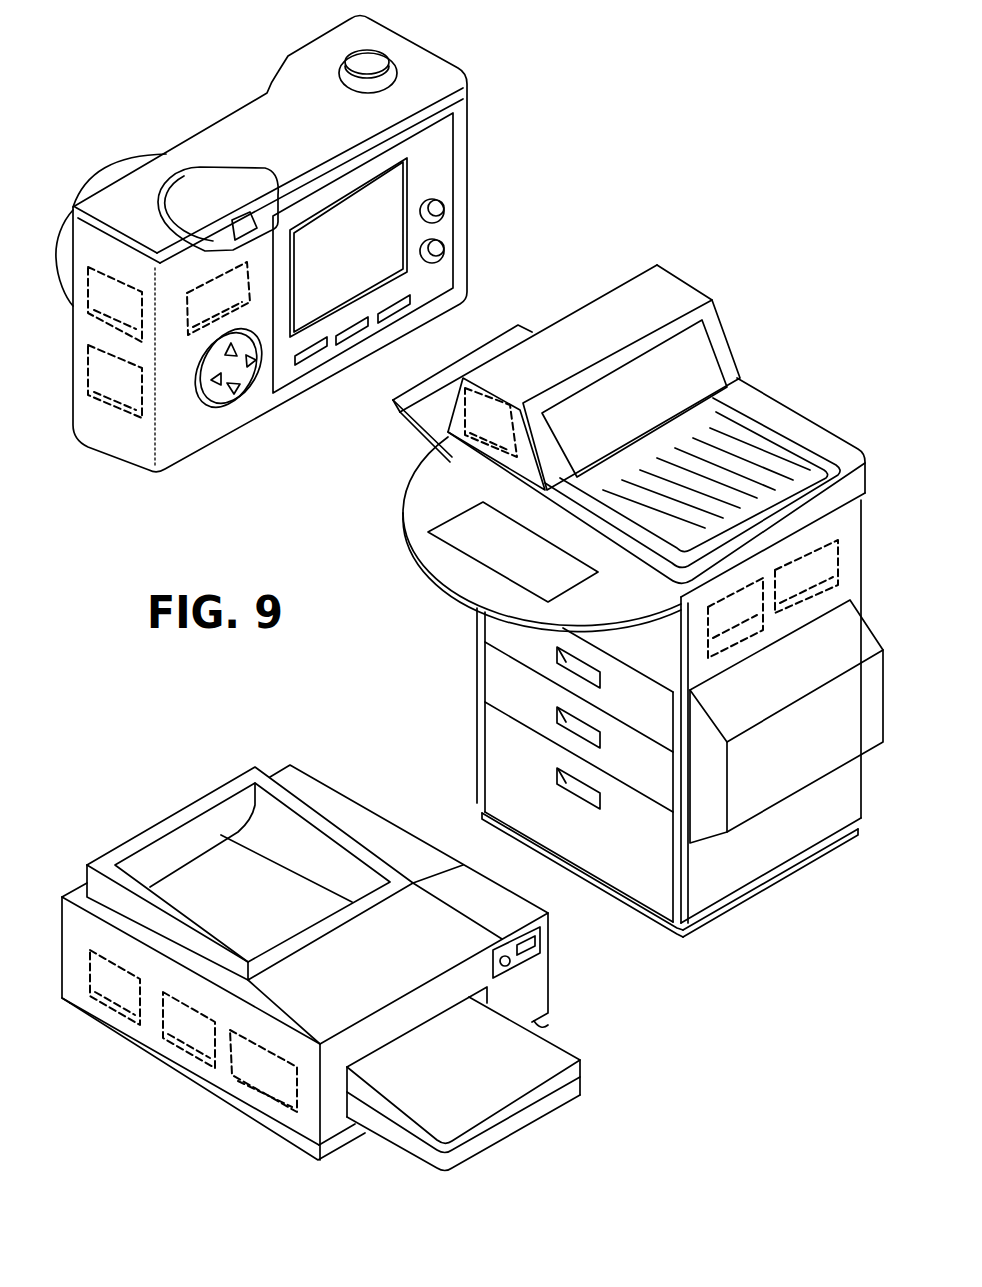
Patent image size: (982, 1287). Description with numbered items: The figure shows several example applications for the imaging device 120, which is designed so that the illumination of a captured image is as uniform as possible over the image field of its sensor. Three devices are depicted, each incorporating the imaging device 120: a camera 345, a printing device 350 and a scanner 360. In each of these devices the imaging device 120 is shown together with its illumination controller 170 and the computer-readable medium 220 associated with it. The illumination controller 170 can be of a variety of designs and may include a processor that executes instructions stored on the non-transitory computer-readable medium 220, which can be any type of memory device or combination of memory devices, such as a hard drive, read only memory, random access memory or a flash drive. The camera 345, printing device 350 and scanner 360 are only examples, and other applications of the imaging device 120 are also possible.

The imaging device 120 is at (302, 646).
The illumination controller 170 is at (425, 706).
The computer-readable medium 220 is at (252, 280).
The camera 345 is at (212, 128).
The printing device 350 is at (560, 318).
The scanner 360 is at (167, 813).